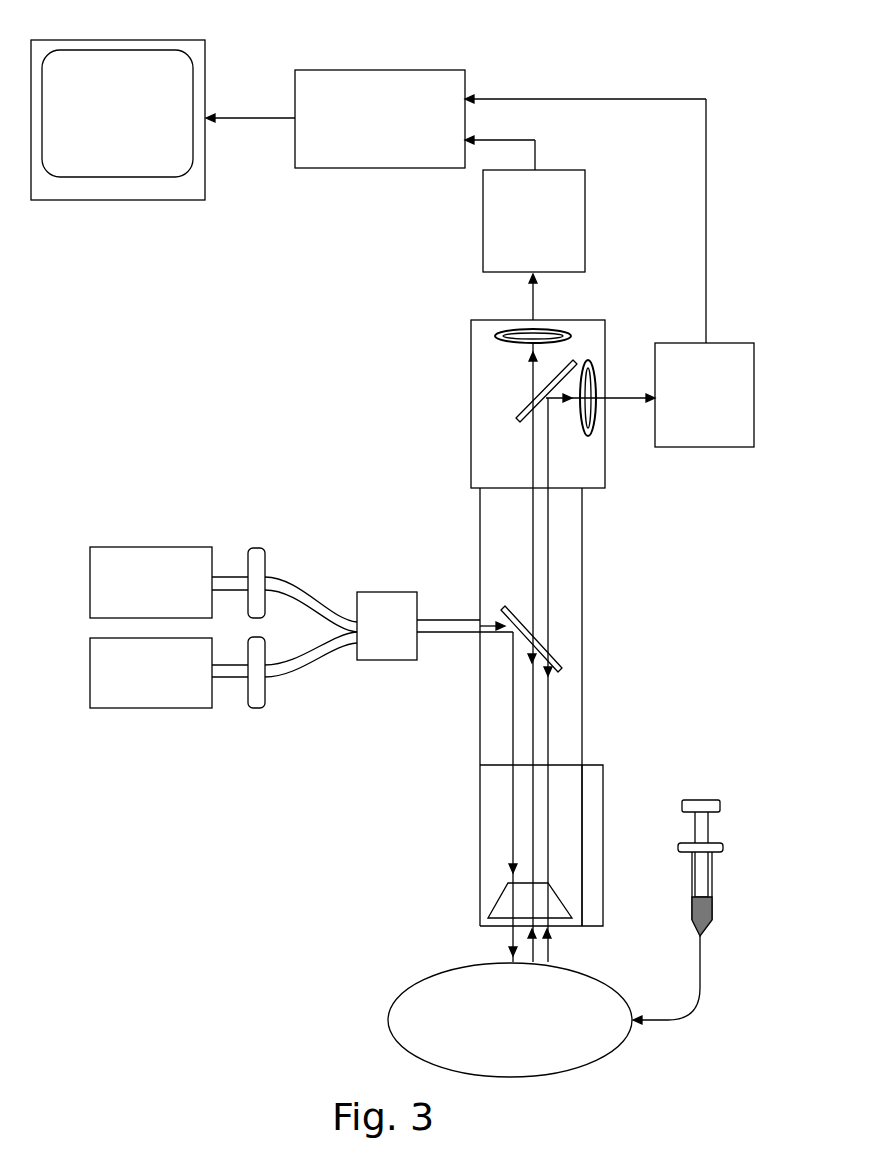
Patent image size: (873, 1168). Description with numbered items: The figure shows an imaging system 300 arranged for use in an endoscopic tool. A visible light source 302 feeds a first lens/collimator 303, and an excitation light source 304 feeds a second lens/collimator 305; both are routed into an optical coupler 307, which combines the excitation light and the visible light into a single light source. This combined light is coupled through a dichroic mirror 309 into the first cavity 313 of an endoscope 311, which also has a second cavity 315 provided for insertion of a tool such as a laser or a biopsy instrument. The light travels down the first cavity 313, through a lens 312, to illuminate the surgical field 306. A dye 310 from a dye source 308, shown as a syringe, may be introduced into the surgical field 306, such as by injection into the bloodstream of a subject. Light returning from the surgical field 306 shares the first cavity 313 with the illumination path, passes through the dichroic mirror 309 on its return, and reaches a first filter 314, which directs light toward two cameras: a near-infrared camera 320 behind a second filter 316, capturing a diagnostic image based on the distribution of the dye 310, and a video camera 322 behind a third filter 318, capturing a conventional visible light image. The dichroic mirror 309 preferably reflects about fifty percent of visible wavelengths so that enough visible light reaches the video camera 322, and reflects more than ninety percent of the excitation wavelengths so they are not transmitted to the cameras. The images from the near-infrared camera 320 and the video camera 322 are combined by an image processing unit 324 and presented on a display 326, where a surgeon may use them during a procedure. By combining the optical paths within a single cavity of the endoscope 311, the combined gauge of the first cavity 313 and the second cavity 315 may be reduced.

The imaging system 300 is at (328, 825).
The visible light source 302 is at (90, 586).
The first lens/collimator 303 is at (267, 562).
The excitation light source 304 is at (90, 680).
The second lens/collimator 305 is at (267, 702).
The surgical field 306 is at (386, 1021).
The optical coupler 307 is at (366, 641).
The dye source 308 is at (713, 866).
The dichroic mirror 309 is at (563, 655).
The dye 310 is at (714, 921).
The endoscope 311 is at (603, 772).
The lens 312 is at (487, 917).
The first cavity 313 is at (490, 821).
The first filter 314 is at (523, 418).
The second cavity 315 is at (594, 823).
The second filter 316 is at (516, 346).
The third filter 318 is at (585, 433).
The near-infrared camera 320 is at (586, 213).
The video camera 322 is at (755, 375).
The image processing unit 324 is at (397, 69).
The display 326 is at (170, 40).